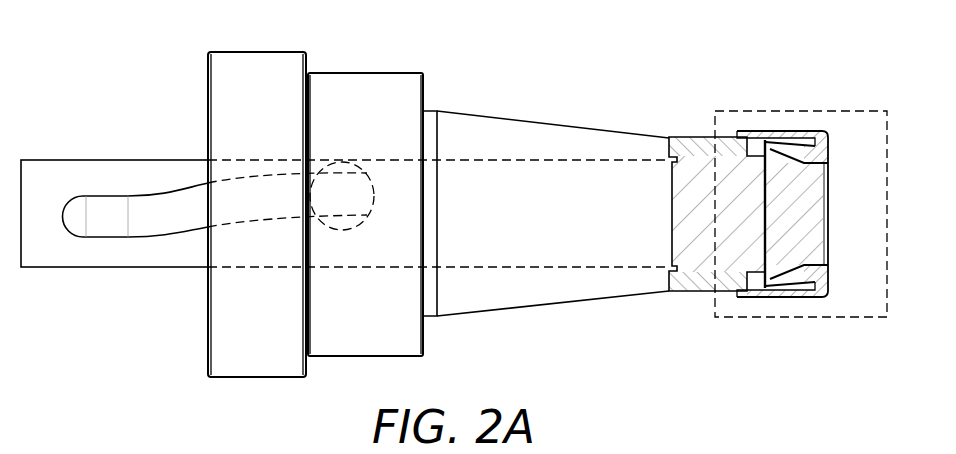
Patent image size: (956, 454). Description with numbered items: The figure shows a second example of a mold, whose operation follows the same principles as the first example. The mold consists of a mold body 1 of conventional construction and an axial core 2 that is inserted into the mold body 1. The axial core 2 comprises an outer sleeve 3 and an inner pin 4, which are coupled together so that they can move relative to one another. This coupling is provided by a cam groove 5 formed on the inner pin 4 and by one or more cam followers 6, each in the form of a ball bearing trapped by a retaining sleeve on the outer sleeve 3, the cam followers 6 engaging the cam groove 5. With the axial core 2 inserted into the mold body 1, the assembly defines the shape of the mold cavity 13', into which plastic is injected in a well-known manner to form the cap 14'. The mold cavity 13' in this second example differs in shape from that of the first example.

The mold body 1 is at (853, 111).
The axial core 2 is at (563, 93).
The outer sleeve 3 is at (252, 62).
The inner pin 4 is at (57, 170).
The cam groove 5 is at (108, 229).
The cam follower 6 is at (367, 173).
The mold cavity 13' is at (782, 178).
The cap 14' is at (787, 288).